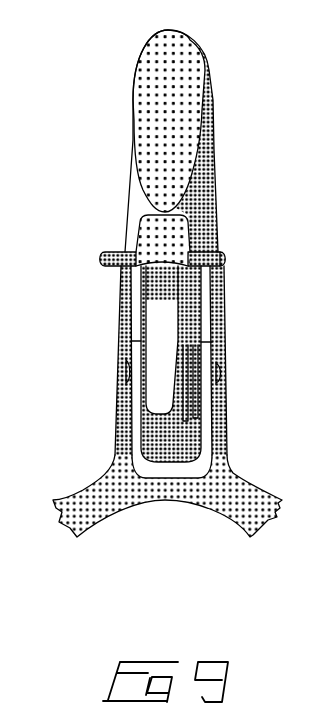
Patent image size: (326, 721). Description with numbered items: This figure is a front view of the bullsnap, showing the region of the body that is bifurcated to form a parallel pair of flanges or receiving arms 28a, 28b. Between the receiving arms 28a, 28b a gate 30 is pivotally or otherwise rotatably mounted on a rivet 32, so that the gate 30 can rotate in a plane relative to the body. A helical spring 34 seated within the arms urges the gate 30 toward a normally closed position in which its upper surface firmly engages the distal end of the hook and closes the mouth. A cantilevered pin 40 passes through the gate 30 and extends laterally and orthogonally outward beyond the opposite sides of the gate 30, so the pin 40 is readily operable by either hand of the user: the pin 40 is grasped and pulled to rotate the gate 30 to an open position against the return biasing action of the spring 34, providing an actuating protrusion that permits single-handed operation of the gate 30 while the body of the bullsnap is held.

The cantilevered pin 40 is at (199, 258).
The gate 30 is at (160, 318).
The rivet 32 is at (221, 373).
The receiving arm 28a is at (137, 413).
The receiving arm 28b is at (207, 405).
The helical spring 34 is at (197, 420).